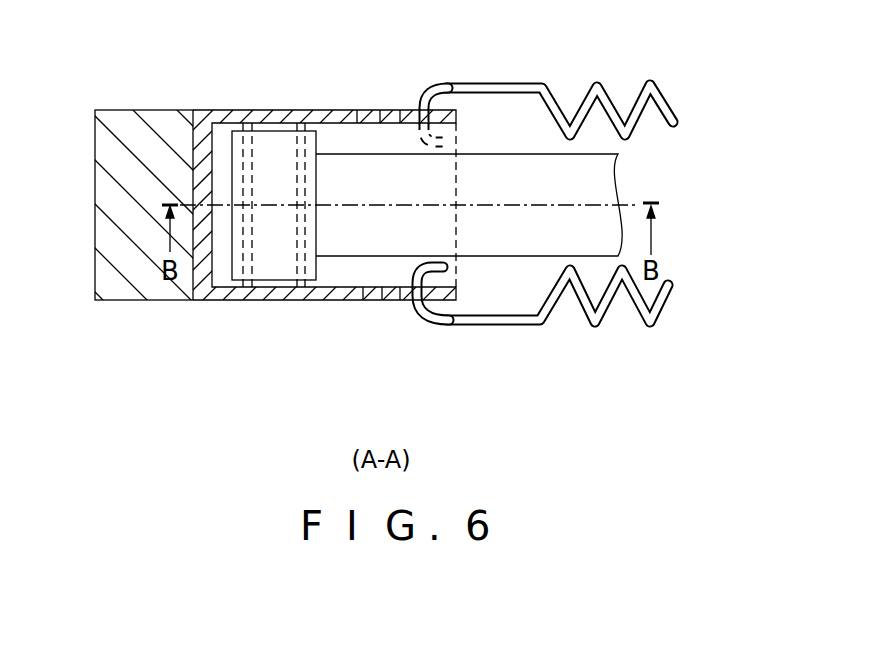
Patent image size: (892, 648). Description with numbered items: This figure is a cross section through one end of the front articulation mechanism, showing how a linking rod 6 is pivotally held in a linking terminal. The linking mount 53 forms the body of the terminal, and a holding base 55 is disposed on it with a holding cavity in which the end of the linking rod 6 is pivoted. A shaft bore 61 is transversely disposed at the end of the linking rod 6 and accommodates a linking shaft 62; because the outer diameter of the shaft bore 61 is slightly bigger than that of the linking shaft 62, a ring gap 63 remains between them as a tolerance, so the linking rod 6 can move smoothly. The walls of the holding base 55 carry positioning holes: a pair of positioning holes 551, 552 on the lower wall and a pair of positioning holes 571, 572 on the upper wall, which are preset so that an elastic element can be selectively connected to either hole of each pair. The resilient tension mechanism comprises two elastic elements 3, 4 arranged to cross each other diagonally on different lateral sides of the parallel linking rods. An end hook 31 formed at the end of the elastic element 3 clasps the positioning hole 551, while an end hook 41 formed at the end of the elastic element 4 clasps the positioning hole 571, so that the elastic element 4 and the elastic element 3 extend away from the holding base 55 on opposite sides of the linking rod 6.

The linking mount 53 is at (121, 118).
The holding base 55 is at (217, 118).
The linking shaft 62 is at (288, 171).
The ring gap 63 is at (253, 272).
The shaft bore 61 is at (308, 272).
The positioning hole 572 is at (368, 116).
The positioning hole 571 is at (412, 118).
The positioning hole 552 is at (367, 300).
The positioning hole 551 is at (408, 300).
The end hook 41 is at (434, 90).
The end hook 31 is at (424, 312).
The elastic element 4 is at (597, 84).
The elastic element 3 is at (592, 326).
The linking rod 6 is at (582, 178).